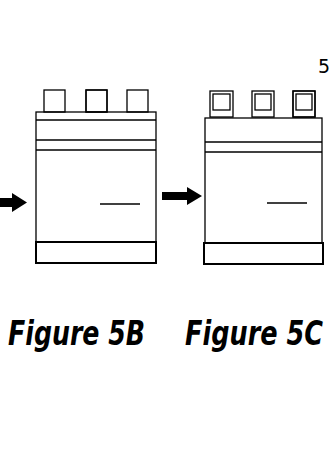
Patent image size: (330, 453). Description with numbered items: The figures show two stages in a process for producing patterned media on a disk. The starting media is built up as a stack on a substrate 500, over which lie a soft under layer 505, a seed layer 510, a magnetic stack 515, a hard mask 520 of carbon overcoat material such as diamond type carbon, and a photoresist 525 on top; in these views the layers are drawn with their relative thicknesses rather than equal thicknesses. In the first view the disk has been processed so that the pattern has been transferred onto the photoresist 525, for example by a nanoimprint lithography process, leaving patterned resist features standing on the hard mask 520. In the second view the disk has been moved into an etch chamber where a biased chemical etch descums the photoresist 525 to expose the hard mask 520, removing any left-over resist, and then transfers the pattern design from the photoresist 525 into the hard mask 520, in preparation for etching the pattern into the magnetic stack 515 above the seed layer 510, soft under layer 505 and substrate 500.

In FIG. 5B, the substrate 500 is at (40, 247).
In FIG. 5C, the substrate 500 is at (208, 250).
In FIG. 5B, the soft under layer 505 is at (96, 194).
In FIG. 5C, the soft under layer 505 is at (263, 193).
In FIG. 5B, the seed layer 510 is at (58, 148).
In FIG. 5C, the seed layer 510 is at (228, 148).
In FIG. 5B, the magnetic stack 515 is at (99, 130).
In FIG. 5C, the magnetic stack 515 is at (262, 129).
In FIG. 5B, the hard mask 520 is at (43, 108).
In FIG. 5C, the hard mask 520 is at (212, 97).
In FIG. 5B, the photoresist 525 is at (98, 98).
In FIG. 5C, the photoresist 525 is at (302, 100).